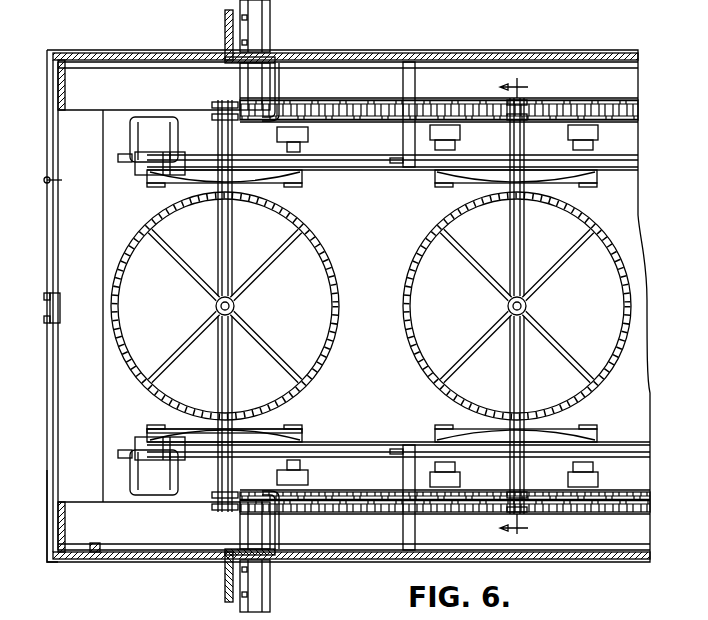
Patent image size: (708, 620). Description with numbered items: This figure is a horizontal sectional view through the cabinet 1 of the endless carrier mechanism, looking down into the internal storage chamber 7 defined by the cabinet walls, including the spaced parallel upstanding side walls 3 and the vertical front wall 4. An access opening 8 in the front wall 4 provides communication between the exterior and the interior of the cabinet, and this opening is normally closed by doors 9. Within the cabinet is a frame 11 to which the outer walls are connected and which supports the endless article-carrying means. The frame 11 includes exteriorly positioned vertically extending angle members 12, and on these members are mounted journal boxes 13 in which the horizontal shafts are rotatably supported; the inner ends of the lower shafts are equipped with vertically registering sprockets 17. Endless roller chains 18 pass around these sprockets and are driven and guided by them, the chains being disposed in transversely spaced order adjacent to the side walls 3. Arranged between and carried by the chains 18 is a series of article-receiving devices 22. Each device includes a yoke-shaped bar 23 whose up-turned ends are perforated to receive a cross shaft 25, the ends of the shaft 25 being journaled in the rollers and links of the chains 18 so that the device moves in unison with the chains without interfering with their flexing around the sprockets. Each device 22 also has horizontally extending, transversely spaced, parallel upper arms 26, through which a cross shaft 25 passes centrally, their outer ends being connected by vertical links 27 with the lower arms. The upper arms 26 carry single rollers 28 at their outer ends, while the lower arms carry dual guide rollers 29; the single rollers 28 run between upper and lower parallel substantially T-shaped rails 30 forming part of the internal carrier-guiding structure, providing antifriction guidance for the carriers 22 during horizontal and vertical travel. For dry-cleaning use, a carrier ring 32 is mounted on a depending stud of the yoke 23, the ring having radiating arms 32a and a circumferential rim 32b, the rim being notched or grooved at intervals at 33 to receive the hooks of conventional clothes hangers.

The cabinet 1 is at (668, 62).
The side walls 3 is at (340, 59).
The front wall 4 is at (50, 493).
The storage chamber 7 is at (366, 407).
The access opening 8 is at (62, 180).
The doors 9 is at (50, 265).
The frame 11 is at (96, 555).
The angle members 12 is at (225, 22).
The journal boxes 13 is at (262, 22).
The sprockets 17 is at (298, 106).
The endless roller chains 18 is at (640, 108).
The article-receiving devices 22 is at (397, 261).
The yoke-shaped bar 23 is at (232, 239).
The cross shaft 25 is at (230, 386).
The upper arms 26 is at (290, 184).
The vertical links 27 is at (304, 447).
The single rollers 28 is at (152, 166).
The dual guide rollers 29 is at (154, 131).
The T-shaped rails 30 is at (413, 168).
The carrier ring 32 is at (333, 366).
The radiating arms 32a is at (254, 348).
The circumferential rim 32b is at (126, 256).
The grooves 33 is at (340, 334).